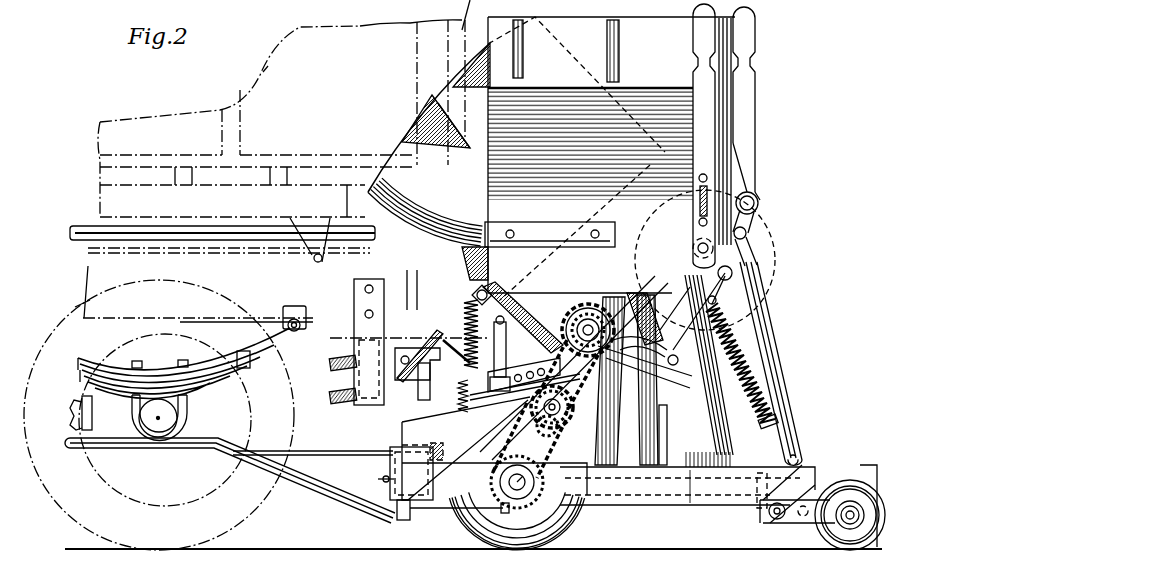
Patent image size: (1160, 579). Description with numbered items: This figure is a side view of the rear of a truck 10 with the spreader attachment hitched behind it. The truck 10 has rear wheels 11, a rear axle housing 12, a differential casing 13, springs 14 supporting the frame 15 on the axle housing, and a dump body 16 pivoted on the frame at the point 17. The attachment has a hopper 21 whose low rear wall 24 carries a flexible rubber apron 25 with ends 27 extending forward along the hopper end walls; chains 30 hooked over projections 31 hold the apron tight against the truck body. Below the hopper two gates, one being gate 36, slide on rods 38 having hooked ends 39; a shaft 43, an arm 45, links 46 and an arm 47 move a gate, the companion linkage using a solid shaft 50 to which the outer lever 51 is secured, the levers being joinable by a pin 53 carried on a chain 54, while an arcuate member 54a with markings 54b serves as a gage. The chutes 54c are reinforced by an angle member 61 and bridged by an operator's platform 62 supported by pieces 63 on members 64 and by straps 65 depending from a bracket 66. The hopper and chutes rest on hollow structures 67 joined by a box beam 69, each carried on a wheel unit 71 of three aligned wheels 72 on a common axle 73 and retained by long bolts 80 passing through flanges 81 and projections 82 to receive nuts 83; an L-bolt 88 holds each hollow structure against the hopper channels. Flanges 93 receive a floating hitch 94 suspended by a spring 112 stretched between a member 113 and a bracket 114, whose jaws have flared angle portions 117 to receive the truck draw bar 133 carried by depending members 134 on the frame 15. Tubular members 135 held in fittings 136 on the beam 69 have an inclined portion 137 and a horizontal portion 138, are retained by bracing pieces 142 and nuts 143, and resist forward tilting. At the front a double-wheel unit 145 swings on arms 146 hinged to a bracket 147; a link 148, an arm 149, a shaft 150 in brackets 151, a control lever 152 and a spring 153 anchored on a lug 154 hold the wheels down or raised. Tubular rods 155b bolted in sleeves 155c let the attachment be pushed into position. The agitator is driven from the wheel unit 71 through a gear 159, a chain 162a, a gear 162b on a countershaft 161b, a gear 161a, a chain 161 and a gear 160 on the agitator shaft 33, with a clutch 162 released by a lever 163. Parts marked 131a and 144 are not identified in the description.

The truck 10 is at (121, 111).
The rear wheels 11 is at (192, 290).
The rear axle housing 12 is at (173, 418).
The differential casing 13 is at (168, 467).
The springs 14 is at (261, 370).
The frame 15 is at (322, 312).
The dump body 16 is at (268, 70).
The pivot point 17 is at (312, 262).
The hopper 21 is at (676, 47).
The rear wall 24 is at (587, 307).
The flexible sheet or apron 25 is at (415, 140).
The sheet ends 27 is at (605, 63).
The chains 30 is at (612, 35).
The projections 31 is at (700, 12).
The agitator shaft 33 is at (590, 312).
The gate 36 is at (574, 370).
The rods 38 is at (640, 392).
The hooked ends 39 is at (643, 317).
The shaft 43 is at (723, 311).
The arm 45 is at (688, 340).
The links 46 is at (728, 332).
The arm 47 is at (752, 257).
The solid shaft 50 is at (745, 230).
The outer lever 51 is at (703, 78).
The pin 53 is at (707, 178).
The chain 54 is at (702, 203).
The arcuate member 54a is at (700, 190).
The markings 54b is at (697, 237).
The chutes 54c is at (622, 539).
The angle member 61 is at (668, 443).
The platform 62 is at (807, 467).
The pieces 63 is at (710, 467).
The members 64 is at (660, 427).
The straps 65 is at (724, 436).
The bracket 66 is at (773, 280).
The hollow structures 67 is at (430, 417).
The box beam 69 is at (438, 539).
The wheel unit 71 is at (567, 537).
The wheels 72 is at (561, 531).
The axle 73 is at (530, 488).
The long bolts 80 is at (480, 493).
The flanges 81 is at (507, 510).
The projections 82 is at (405, 520).
The nuts 83 is at (390, 517).
The L-bolt 88 is at (470, 303).
The flanges 93 is at (525, 358).
The floating hitch 94 is at (358, 415).
The spring 112 is at (473, 322).
The member 113 is at (487, 422).
The bracket 114 is at (462, 275).
The angle portions 117 is at (333, 398).
The latch lever 131a is at (437, 340).
The draft member 133 is at (350, 385).
The depending members 134 is at (386, 274).
The tubular members 135 is at (242, 470).
The fittings 136 is at (397, 450).
The inclined portion 137 is at (297, 477).
The horizontal portion 138 is at (108, 440).
The bracing pieces 142 is at (346, 439).
The nuts 143 is at (444, 441).
The bolt 144 is at (383, 480).
The double-wheel unit 145 is at (854, 499).
The arms 146 is at (790, 524).
The bracket 147 is at (763, 512).
The link 148 is at (762, 297).
The arm 149 is at (700, 222).
The shaft 150 is at (757, 205).
The brackets 151 is at (750, 193).
The control lever 152 is at (747, 117).
The spring 153 is at (780, 323).
The lug 154 is at (772, 419).
The tubular rods 155b is at (196, 232).
The sleeves 155c is at (528, 232).
The gear 159 is at (507, 485).
The gear 160 is at (568, 333).
The chain 161 is at (565, 391).
The gear 161a is at (545, 430).
The countershaft 161b is at (628, 449).
The clutch 162 is at (593, 315).
The chain 162a is at (537, 542).
The gear 162b is at (448, 433).
The lever 163 is at (757, 387).